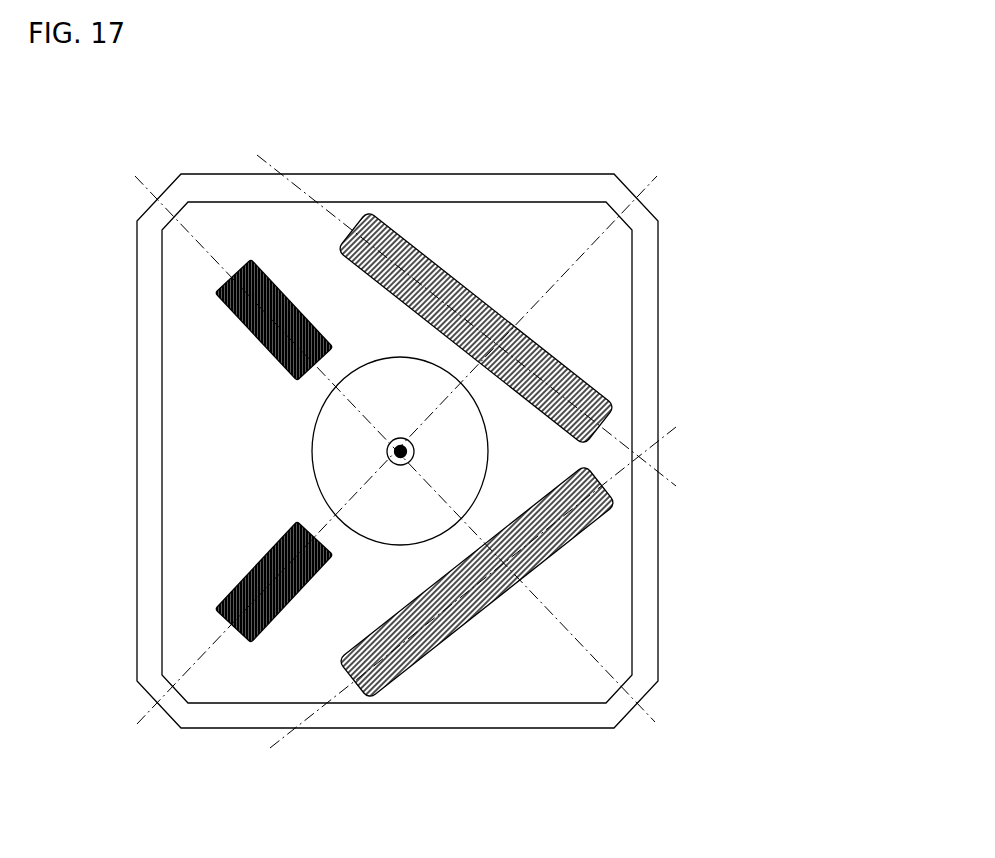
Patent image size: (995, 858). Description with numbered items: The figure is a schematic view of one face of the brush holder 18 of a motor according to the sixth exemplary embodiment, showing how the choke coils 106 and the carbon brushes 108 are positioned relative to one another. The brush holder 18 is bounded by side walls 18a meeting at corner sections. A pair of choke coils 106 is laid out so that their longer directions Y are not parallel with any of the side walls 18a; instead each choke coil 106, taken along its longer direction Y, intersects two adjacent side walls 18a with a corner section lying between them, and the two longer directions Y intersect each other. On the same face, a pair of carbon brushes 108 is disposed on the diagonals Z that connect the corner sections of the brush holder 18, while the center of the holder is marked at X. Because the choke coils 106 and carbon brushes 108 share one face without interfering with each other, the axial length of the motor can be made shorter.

The brush holder 18 is at (684, 160).
The side walls 18a is at (385, 174).
The choke coils 106 is at (597, 380).
The carbon brushes 108 is at (220, 292).
The X axis (center) X is at (414, 452).
The longer direction Y is at (668, 428).
The diagonals Z is at (152, 192).